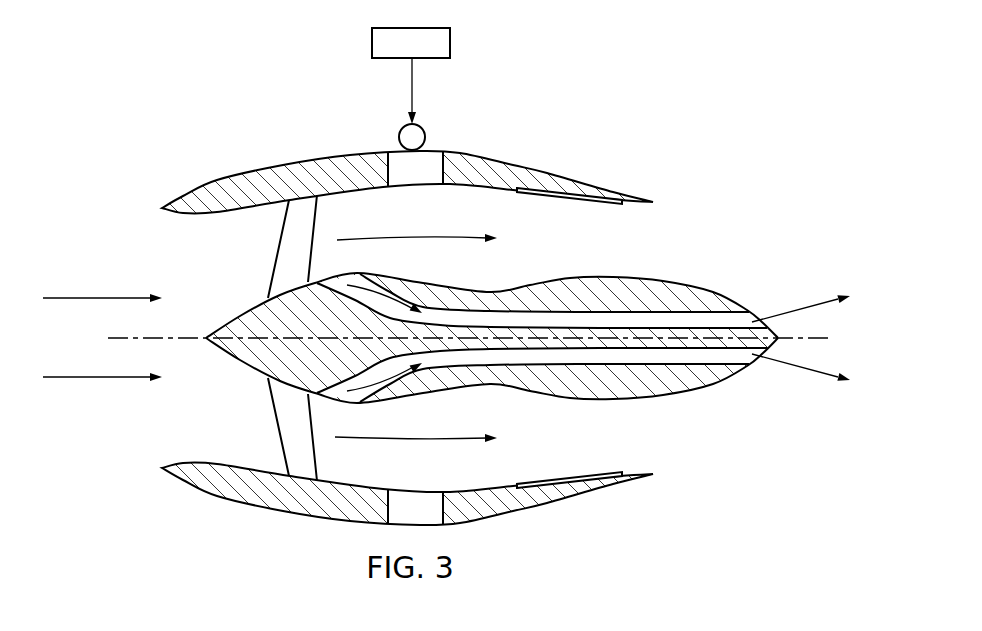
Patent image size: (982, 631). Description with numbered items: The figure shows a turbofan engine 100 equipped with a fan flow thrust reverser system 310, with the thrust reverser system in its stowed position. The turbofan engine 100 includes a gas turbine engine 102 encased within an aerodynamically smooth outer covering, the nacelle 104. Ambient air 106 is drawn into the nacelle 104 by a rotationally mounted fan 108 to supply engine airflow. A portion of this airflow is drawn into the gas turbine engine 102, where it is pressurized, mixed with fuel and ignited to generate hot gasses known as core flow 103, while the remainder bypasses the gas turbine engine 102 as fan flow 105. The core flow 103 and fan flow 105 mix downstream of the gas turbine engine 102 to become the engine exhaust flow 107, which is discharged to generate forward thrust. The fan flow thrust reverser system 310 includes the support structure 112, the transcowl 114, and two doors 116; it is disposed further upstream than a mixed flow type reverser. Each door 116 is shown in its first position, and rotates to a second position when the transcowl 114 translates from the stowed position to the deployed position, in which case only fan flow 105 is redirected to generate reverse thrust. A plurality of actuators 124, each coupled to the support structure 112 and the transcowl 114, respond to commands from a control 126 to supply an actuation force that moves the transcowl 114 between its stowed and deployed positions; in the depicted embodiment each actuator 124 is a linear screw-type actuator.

The turbofan engine 100 is at (230, 115).
The gas turbine engine 102 is at (492, 329).
The core flow 103 is at (390, 303).
The nacelle 104 is at (407, 315).
The fan flow 105 is at (426, 234).
The ambient air 106 is at (110, 298).
The engine exhaust flow 107 is at (823, 293).
The fan 108 is at (300, 206).
The support structure 112 is at (392, 152).
The transcowl 114 is at (512, 167).
The door 116 is at (570, 201).
The actuator 124 is at (425, 135).
The control 126 is at (450, 41).
The fan flow thrust reverser system 310 is at (437, 88).